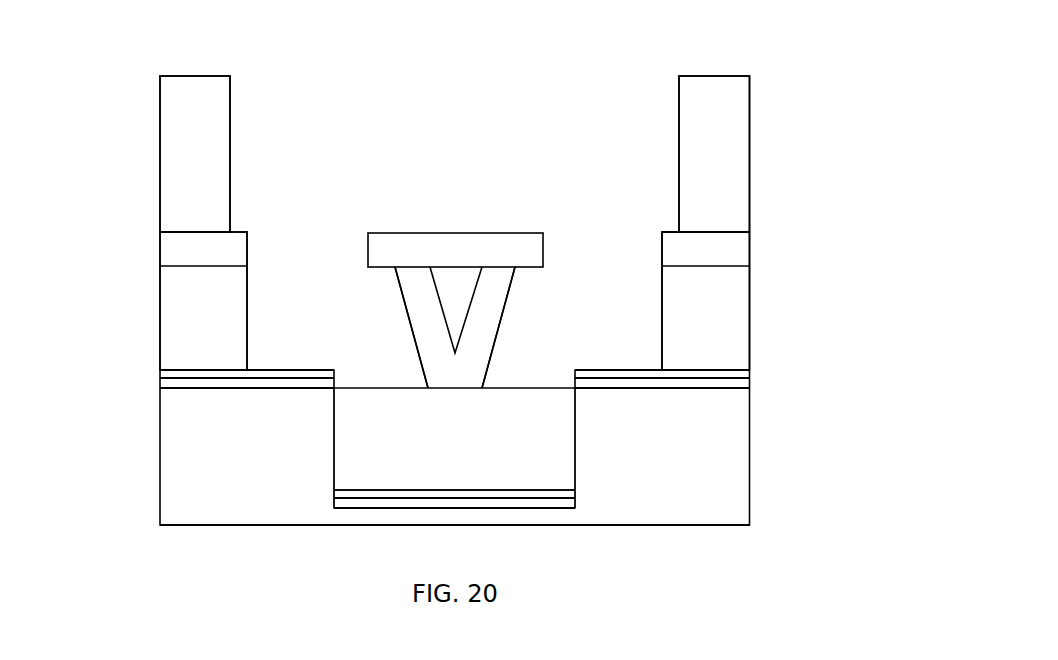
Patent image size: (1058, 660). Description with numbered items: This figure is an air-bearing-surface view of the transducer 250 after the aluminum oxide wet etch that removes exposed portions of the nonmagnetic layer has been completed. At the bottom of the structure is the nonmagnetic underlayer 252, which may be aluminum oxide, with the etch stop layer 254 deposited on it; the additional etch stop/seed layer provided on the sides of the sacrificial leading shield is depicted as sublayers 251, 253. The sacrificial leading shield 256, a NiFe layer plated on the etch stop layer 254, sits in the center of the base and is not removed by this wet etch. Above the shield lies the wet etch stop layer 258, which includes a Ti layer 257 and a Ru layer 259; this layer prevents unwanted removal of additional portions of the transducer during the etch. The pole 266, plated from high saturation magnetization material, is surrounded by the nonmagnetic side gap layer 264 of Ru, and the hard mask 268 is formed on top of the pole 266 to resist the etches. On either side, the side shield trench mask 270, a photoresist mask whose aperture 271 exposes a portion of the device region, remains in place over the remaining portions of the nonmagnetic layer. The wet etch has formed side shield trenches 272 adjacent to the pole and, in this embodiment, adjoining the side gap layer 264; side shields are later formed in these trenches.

The transducer 250 is at (477, 89).
The etch stop layer sublayer 251 is at (575, 498).
The nonmagnetic underlayer 252 is at (627, 525).
The etch stop layer sublayer 253 is at (334, 498).
The etch stop layer 254 is at (456, 524).
The sacrificial leading shield 256 is at (334, 420).
The Ti layer 257 is at (160, 383).
The wet etch stop layer 258 is at (90, 370).
The Ru layer 259 is at (160, 375).
The side gap layer 264 is at (497, 267).
The pole 266 is at (455, 267).
The hard mask 268 is at (467, 233).
The side shield trench mask 270 is at (160, 162).
The aperture 271 is at (385, 145).
The side shield trenches 272 is at (334, 318).